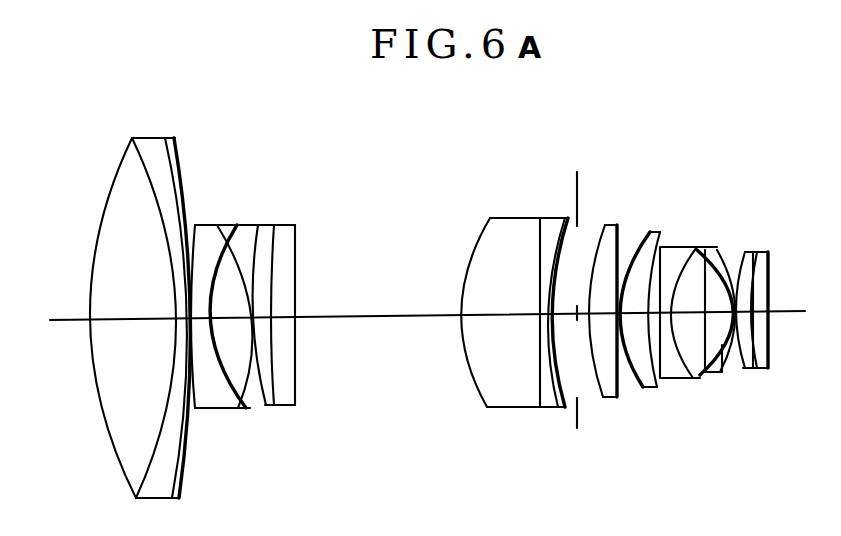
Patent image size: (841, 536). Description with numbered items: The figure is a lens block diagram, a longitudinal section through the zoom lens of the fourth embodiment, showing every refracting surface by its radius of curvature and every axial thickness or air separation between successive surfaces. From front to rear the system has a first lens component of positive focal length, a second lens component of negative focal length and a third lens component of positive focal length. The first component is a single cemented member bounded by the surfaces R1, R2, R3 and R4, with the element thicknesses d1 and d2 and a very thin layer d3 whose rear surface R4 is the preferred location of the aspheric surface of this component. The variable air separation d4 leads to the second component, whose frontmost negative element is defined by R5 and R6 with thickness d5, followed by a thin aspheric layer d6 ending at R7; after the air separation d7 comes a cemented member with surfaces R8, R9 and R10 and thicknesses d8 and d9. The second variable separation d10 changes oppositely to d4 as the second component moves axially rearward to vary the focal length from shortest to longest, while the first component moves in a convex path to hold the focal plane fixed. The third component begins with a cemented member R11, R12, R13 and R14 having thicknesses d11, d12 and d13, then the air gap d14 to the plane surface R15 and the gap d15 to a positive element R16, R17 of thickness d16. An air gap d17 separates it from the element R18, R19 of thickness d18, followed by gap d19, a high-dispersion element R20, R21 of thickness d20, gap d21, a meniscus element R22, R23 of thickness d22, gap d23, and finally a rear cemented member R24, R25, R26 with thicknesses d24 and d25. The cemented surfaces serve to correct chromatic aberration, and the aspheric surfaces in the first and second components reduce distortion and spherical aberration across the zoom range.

The first surface radius of curvature R1 is at (118, 168).
The second surface radius of curvature R2 is at (135, 140).
The third surface radius of curvature R3 is at (164, 140).
The fourth surface radius of curvature R4 is at (177, 140).
The fifth surface radius of curvature R5 is at (195, 232).
The sixth surface radius of curvature R6 is at (228, 232).
The seventh surface radius of curvature R7 is at (232, 240).
The eighth surface radius of curvature R8 is at (254, 240).
The ninth surface radius of curvature R9 is at (276, 240).
The tenth surface radius of curvature R10 is at (297, 238).
The eleventh surface radius of curvature R11 is at (479, 235).
The twelfth surface radius of curvature R12 is at (538, 227).
The thirteenth surface radius of curvature R13 is at (558, 228).
The fourteenth surface radius of curvature R14 is at (566, 225).
The fifteenth surface R15 is at (574, 291).
The sixteenth surface radius of curvature R16 is at (606, 225).
The seventeenth surface radius of curvature R17 is at (617, 225).
The eighteenth surface radius of curvature R18 is at (650, 232).
The nineteenth surface radius of curvature R19 is at (660, 232).
The twentieth surface radius of curvature R20 is at (698, 247).
The twenty-first surface radius of curvature R21 is at (699, 250).
The twenty-second surface radius of curvature R22 is at (718, 250).
The twenty-third surface radius of curvature R23 is at (740, 262).
The twenty-fourth surface radius of curvature R24 is at (750, 253).
The twenty-fifth surface radius of curvature R25 is at (768, 251).
The twenty-sixth surface radius of curvature R26 is at (770, 262).
The first axial thickness d1 is at (104, 320).
The second axial thickness d2 is at (183, 317).
The third axial thickness d3 is at (188, 318).
The fourth axial air separation d4 is at (201, 310).
The fifth axial thickness d5 is at (203, 330).
The sixth axial thickness d6 is at (212, 317).
The seventh axial air separation d7 is at (228, 322).
The eighth axial thickness d8 is at (255, 328).
The ninth axial thickness d9 is at (279, 322).
The tenth axial air separation d10 is at (346, 318).
The eleventh axial thickness d11 is at (479, 316).
The twelfth axial thickness d12 is at (543, 313).
The thirteenth axial thickness d13 is at (548, 314).
The fourteenth axial air separation d14 is at (558, 312).
The fifteenth axial air separation d15 is at (577, 316).
The sixteenth axial thickness d16 is at (598, 318).
The seventeenth axial air separation d17 is at (620, 313).
The eighteenth axial thickness d18 is at (633, 318).
The nineteenth axial air separation d19 is at (650, 386).
The twentieth axial thickness d20 is at (676, 372).
The twenty-first axial air separation d21 is at (683, 314).
The twenty-second axial thickness d22 is at (718, 311).
The twenty-third axial air separation d23 is at (735, 319).
The twenty-fourth axial thickness d24 is at (748, 369).
The twenty-fifth axial thickness d25 is at (772, 345).